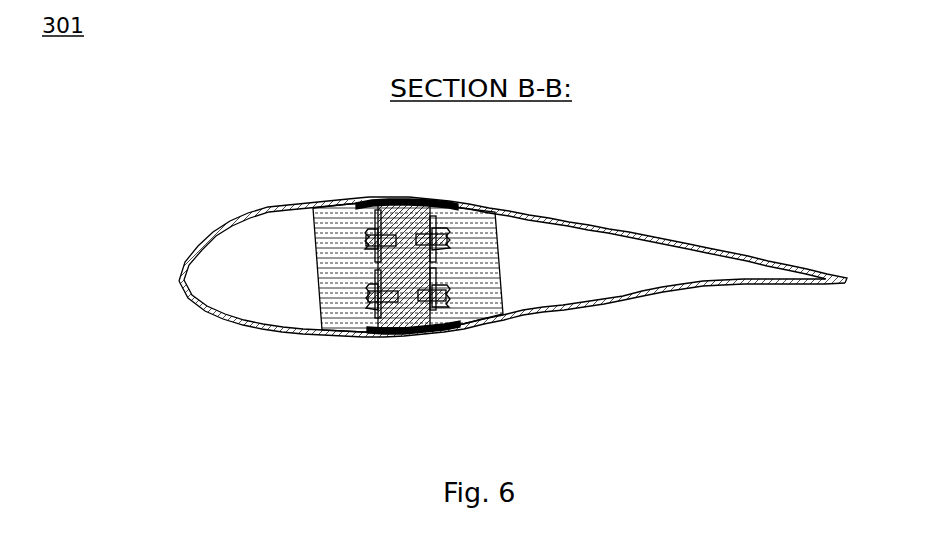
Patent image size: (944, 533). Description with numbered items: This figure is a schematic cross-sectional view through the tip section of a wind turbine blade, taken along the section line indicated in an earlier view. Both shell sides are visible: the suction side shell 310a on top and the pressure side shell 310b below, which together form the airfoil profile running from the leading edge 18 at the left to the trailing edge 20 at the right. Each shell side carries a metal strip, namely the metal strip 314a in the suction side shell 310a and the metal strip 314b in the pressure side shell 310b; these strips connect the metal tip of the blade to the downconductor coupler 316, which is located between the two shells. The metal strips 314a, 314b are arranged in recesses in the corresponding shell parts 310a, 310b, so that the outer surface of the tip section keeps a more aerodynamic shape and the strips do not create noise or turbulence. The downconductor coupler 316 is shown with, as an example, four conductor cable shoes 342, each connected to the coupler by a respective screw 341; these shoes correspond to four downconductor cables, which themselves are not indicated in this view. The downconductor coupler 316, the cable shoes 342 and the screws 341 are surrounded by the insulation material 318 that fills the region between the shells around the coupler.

The leading edge 18 is at (178, 276).
The trailing edge 20 is at (845, 286).
The shell side (suction side) 310a is at (609, 228).
The shell side (pressure side) 310b is at (607, 302).
The metal strip 314a is at (409, 200).
The metal strip 314b is at (412, 329).
The downconductor coupler 316 is at (394, 324).
The insulation material 318 is at (331, 221).
The screw 341 is at (441, 232).
The conductor cable shoe 342 is at (465, 310).